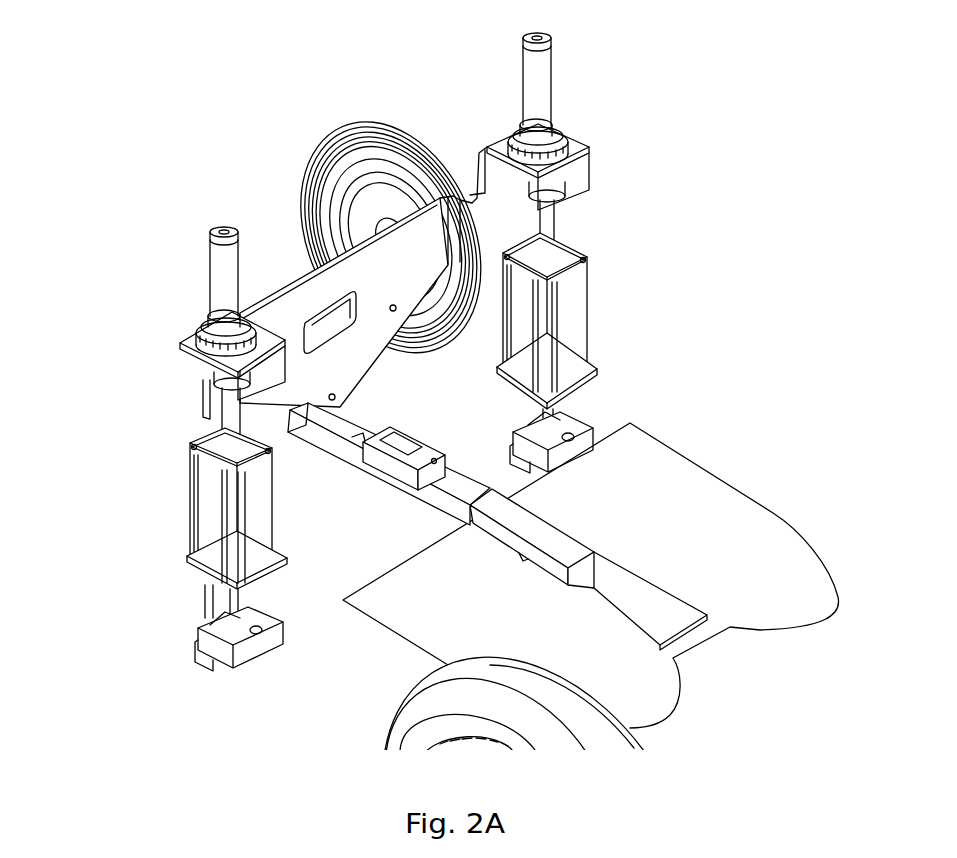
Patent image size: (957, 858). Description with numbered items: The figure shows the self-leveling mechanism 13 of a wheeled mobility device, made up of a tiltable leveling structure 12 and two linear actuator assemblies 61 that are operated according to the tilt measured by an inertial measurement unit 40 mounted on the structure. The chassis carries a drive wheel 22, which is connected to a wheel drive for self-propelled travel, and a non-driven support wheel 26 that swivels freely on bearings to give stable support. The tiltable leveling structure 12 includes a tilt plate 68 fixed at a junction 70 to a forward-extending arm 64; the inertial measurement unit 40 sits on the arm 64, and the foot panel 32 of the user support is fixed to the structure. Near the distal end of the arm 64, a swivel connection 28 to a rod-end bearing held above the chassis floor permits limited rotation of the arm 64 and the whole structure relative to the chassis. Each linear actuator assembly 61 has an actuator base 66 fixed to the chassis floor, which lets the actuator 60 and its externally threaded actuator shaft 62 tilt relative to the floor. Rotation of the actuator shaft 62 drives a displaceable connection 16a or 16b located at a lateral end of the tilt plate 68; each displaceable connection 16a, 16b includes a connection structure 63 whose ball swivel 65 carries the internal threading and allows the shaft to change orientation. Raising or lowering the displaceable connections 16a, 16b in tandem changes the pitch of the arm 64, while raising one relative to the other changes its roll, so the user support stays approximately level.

The tiltable leveling structure 12 is at (597, 510).
The self-leveling mechanism 13 is at (288, 243).
The displaceable connection 16a is at (592, 143).
The displaceable connection 16b is at (180, 338).
The drive wheel 22 is at (396, 718).
The support wheel 26 is at (334, 125).
The swivel connection 28 is at (606, 532).
The foot panel 32 is at (758, 532).
The inertial measurement unit 40 is at (428, 436).
The actuator 60 is at (190, 508).
The linear actuator assembly 61 is at (386, 429).
The actuator shaft 62 is at (228, 412).
The connection structure 63 is at (200, 318).
The arm 64 is at (381, 487).
The ball swivel 65 is at (211, 292).
The actuator base 66 is at (197, 638).
The tilt plate 68 is at (351, 277).
The junction 70 is at (340, 398).